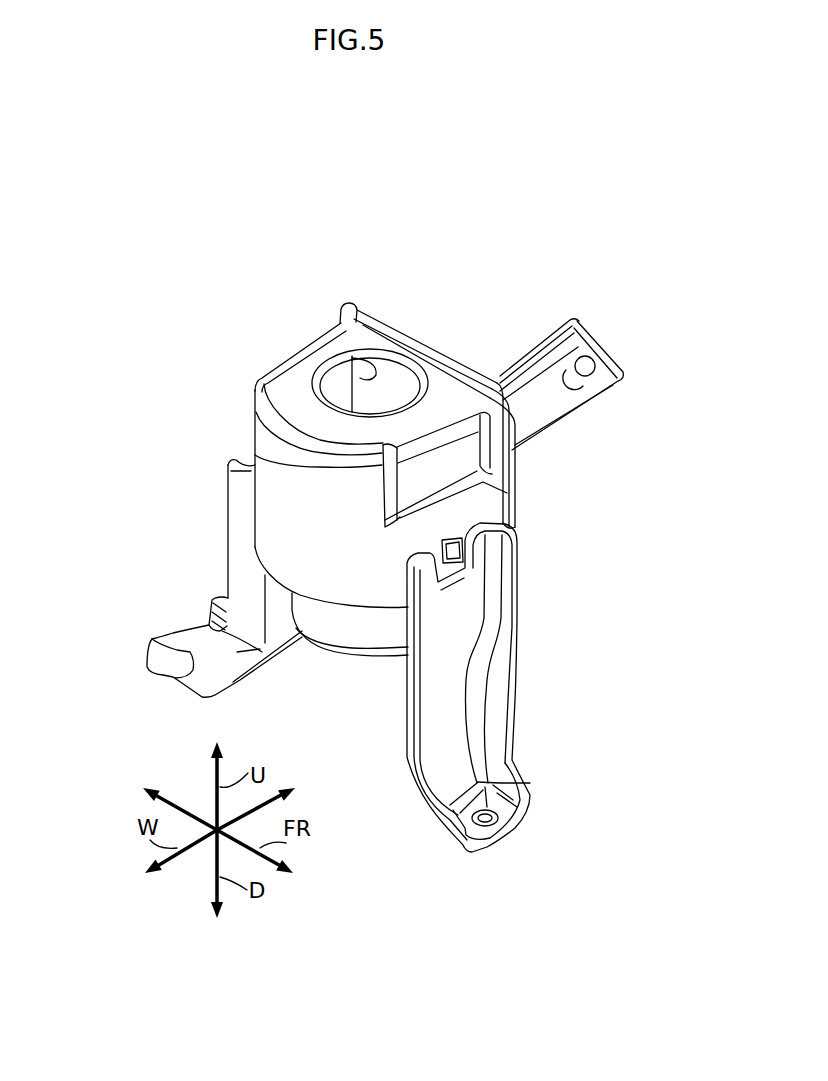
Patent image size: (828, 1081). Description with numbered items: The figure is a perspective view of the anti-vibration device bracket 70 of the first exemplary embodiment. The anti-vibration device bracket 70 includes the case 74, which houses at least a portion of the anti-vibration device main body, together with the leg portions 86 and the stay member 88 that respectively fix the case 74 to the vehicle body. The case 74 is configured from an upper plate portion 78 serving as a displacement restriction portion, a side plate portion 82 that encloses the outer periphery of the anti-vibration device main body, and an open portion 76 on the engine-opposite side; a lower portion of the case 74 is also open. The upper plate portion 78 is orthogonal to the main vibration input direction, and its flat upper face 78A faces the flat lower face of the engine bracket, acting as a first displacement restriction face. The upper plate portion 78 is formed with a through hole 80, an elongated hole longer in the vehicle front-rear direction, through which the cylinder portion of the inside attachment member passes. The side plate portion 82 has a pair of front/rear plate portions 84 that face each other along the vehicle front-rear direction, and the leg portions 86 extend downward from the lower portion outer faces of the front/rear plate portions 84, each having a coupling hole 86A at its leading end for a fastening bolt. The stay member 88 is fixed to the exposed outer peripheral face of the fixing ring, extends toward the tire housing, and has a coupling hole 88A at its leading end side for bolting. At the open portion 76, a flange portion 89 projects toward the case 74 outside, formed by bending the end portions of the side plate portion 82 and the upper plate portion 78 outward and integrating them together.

The anti-vibration device bracket 70 is at (133, 327).
The case 74 is at (268, 272).
The open portion 76 is at (398, 343).
The upper plate portion 78 is at (299, 383).
The upper face 78A is at (317, 350).
The through hole 80 is at (363, 393).
The side plate portion 82 is at (295, 468).
The front/rear plate portions 84 is at (449, 465).
The leg portions 86 is at (224, 531).
The coupling hole 86A is at (172, 680).
The stay member 88 is at (560, 441).
The coupling hole 88A is at (598, 337).
The flange portion 89 is at (448, 353).